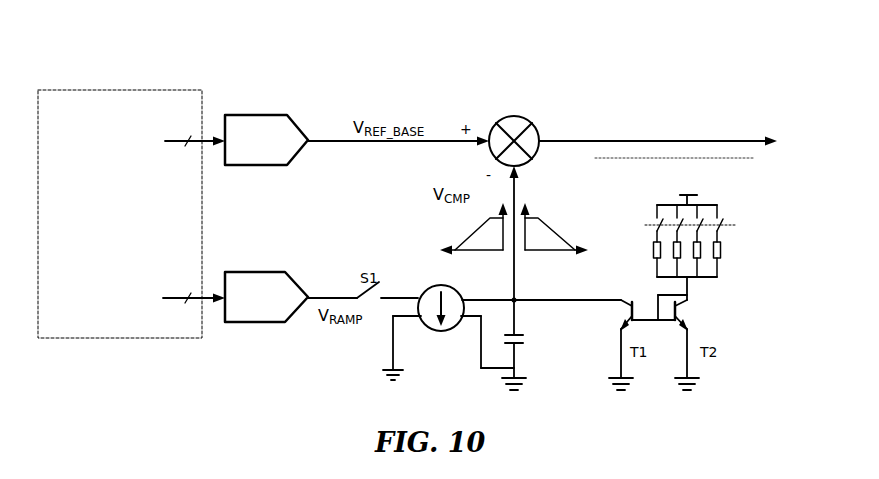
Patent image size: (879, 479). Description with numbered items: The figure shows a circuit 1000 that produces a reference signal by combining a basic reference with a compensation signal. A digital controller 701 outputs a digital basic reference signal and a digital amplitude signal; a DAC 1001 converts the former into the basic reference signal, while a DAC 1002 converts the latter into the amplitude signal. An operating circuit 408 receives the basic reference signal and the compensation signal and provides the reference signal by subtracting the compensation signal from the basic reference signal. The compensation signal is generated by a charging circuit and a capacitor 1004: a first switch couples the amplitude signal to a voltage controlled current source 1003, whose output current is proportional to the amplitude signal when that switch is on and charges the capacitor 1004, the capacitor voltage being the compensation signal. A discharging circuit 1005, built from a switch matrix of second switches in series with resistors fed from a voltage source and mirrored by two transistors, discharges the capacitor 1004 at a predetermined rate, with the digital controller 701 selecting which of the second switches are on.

The digital controller 701 is at (172, 90).
The DAC 1001 is at (282, 115).
The DAC 1002 is at (282, 272).
The operating circuit 408 is at (522, 117).
The circuit 1000 is at (752, 58).
The voltage controlled current source 1003 is at (430, 334).
The capacitor 1004 is at (528, 342).
The discharging circuit 1005 is at (755, 243).